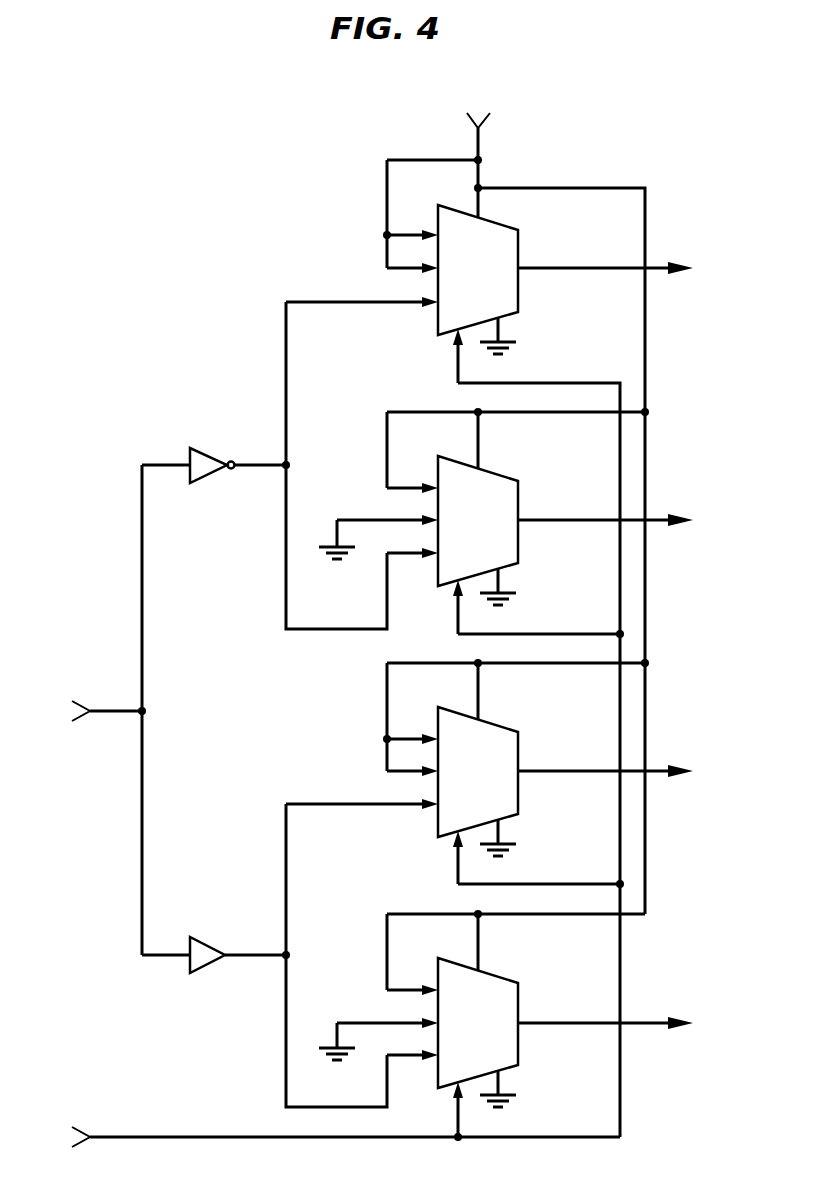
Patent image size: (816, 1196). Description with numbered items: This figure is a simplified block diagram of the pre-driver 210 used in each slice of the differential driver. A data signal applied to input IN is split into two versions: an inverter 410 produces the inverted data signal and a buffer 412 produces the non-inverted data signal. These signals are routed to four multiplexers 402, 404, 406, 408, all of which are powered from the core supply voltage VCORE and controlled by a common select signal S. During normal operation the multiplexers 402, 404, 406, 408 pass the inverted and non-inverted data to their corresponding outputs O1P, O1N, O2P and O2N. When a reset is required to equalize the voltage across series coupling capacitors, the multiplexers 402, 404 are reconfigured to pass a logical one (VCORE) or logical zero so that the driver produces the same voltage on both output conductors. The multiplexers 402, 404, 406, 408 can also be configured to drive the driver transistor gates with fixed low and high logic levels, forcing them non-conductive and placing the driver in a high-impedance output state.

The pre-driver 210 is at (697, 99).
The multiplexer 402 is at (522, 252).
The multiplexer 404 is at (522, 503).
The multiplexer 406 is at (522, 754).
The multiplexer 408 is at (522, 1005).
The inverter 410 is at (197, 477).
The buffer 412 is at (200, 967).